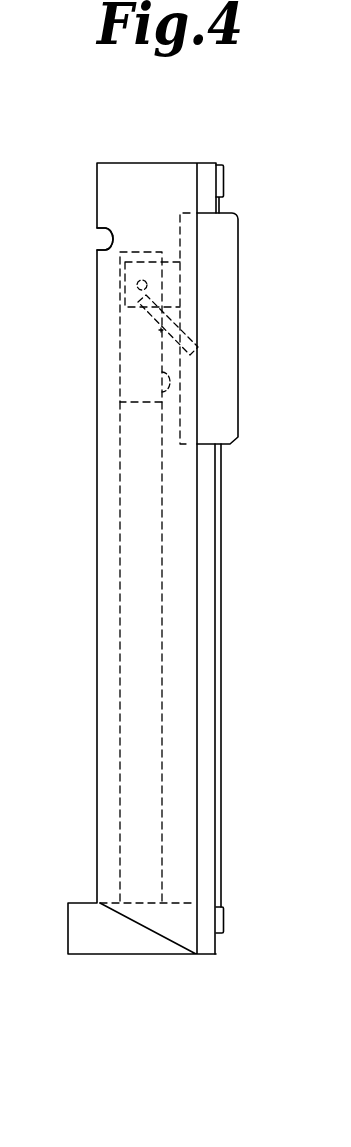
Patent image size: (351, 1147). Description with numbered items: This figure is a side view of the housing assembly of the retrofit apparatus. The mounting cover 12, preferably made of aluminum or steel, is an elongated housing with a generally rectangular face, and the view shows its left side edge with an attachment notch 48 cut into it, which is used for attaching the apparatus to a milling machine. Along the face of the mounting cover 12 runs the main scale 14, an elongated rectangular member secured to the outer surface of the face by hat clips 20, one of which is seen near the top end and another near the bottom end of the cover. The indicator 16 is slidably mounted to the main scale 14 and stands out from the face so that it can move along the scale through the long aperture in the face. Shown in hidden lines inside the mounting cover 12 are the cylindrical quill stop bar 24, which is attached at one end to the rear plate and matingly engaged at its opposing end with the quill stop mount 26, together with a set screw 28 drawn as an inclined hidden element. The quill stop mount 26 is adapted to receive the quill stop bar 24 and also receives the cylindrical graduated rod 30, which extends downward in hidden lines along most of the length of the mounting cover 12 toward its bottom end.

The mounting cover 12 is at (185, 637).
The main scale 14 is at (221, 527).
The indicator 16 is at (227, 237).
The hat clip 20 is at (222, 173).
The quill stop bar 24 is at (130, 290).
The quill stop mount 26 is at (135, 377).
The set screw 28 is at (150, 323).
The graduated rod 30 is at (120, 815).
The attachment notch 48 is at (102, 239).